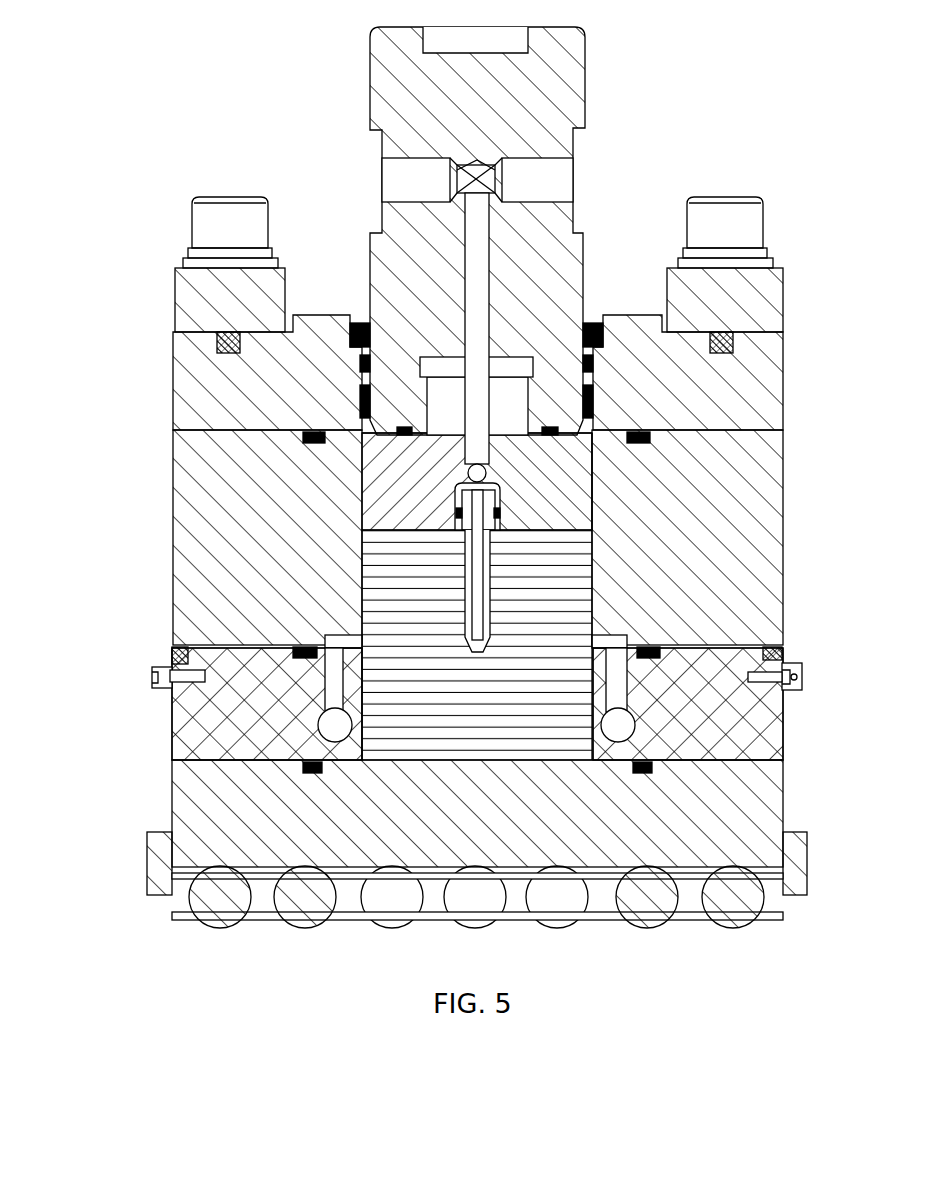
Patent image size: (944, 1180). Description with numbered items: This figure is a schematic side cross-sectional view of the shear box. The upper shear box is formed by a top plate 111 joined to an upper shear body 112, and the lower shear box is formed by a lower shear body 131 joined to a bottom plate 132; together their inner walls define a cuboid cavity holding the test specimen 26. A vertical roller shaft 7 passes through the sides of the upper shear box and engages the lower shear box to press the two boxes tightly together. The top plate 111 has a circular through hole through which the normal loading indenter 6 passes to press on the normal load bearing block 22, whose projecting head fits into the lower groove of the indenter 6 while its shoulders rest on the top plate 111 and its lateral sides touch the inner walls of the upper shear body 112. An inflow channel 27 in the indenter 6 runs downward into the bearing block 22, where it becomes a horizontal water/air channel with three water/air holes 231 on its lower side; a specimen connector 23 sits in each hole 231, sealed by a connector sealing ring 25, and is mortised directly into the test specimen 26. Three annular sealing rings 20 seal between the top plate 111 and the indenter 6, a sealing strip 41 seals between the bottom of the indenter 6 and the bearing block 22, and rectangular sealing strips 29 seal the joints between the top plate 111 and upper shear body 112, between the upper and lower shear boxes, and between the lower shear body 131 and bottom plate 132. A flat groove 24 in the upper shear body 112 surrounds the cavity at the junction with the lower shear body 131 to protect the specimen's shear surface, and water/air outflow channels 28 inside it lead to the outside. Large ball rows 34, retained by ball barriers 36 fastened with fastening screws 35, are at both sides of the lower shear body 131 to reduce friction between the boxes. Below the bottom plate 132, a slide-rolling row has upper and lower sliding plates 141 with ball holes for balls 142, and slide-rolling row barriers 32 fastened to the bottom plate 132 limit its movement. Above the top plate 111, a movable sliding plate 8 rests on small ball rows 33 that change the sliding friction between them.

The normal loading indenter 6 is at (495, 93).
The vertical roller shaft 7 is at (733, 207).
The movable sliding plate 8 is at (730, 298).
The top plate 111 is at (757, 348).
The upper shear body 112 is at (235, 500).
The annular sealing rings 20 is at (593, 363).
The rectangular sealing strips 29 is at (650, 437).
The small ball rows 33 is at (225, 342).
The inflow channel 27 is at (405, 183).
The water/air holes 231 is at (468, 462).
The test specimen 26 is at (400, 570).
The sealing strip 41 is at (585, 447).
The normal load bearing block 22 is at (557, 508).
The specimen connector 23 is at (503, 522).
The connector sealing ring 25 is at (482, 530).
The water/air outflow channels 28 is at (180, 655).
The large ball rows 34 is at (798, 672).
The fastening screws 35 is at (795, 683).
The ball barriers 36 is at (787, 690).
The lower shear body 131 is at (225, 728).
The bottom plate 132 is at (265, 825).
The slide-rolling row barriers 32 is at (150, 835).
The flat groove 24 is at (800, 845).
The balls 142 is at (175, 874).
The sliding plate 141 is at (190, 916).